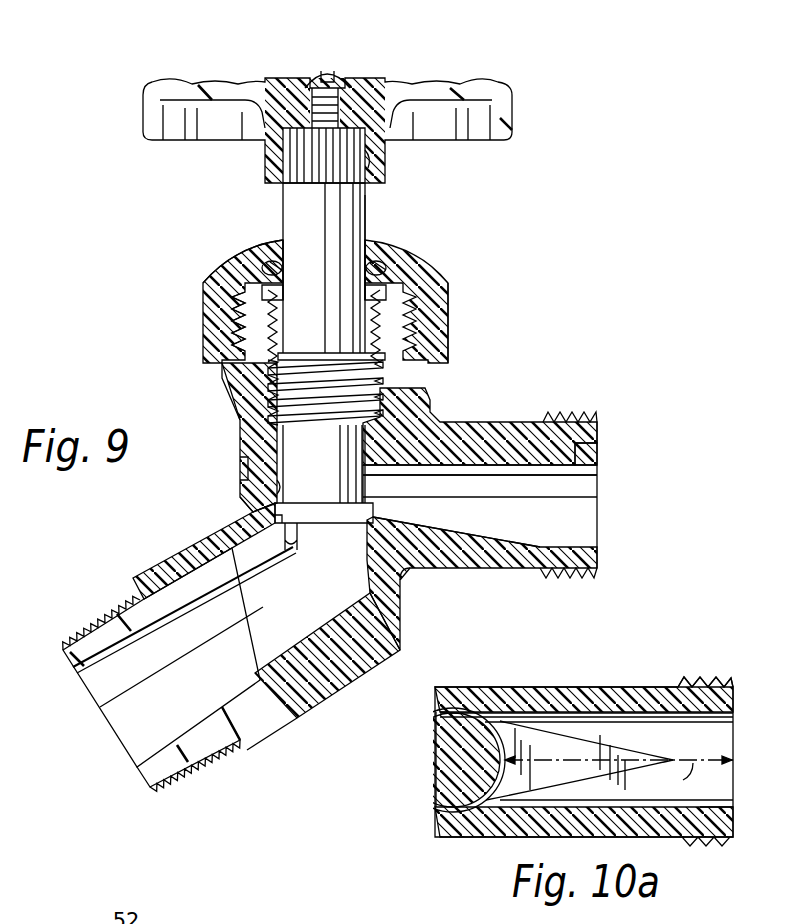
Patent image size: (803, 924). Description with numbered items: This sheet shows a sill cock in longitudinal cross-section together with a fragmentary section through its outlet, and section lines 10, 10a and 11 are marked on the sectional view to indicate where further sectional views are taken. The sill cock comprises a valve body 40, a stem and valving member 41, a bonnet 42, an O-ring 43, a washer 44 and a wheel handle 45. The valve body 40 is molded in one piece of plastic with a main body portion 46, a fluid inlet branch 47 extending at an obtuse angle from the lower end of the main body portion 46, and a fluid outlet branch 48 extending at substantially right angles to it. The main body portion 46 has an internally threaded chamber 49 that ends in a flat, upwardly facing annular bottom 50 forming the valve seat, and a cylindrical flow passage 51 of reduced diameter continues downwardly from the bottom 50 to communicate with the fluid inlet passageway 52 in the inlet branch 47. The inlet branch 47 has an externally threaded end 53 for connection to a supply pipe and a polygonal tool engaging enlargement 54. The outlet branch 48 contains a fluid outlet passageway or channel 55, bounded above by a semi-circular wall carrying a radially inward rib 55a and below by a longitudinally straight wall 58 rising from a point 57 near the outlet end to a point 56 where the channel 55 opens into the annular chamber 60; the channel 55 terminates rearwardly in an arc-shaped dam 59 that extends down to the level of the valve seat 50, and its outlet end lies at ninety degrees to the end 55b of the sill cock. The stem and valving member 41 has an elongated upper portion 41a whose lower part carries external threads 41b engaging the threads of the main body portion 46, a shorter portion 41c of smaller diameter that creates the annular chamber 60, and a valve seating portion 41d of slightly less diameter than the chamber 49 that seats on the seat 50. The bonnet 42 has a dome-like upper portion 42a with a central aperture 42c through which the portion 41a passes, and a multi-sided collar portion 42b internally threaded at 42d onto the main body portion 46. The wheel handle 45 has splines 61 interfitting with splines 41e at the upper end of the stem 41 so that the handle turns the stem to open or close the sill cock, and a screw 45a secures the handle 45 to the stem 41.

In FIG. 9, the valve body 40 is at (240, 469).
In FIG. 9, the stem and valving member 41 is at (372, 222).
In FIG. 9, the elongated upper portion 41a is at (375, 198).
In FIG. 9, the external threads 41b is at (423, 372).
In FIG. 9, the shorter portion 41c is at (290, 455).
In FIG. 9, the valve seating portion 41d is at (183, 562).
In FIG. 10A, the valve seating portion 41d is at (437, 732).
In FIG. 9, the splines 41e is at (300, 150).
In FIG. 9, the bonnet 42 is at (265, 262).
In FIG. 9, the dome-like portion 42a is at (212, 285).
In FIG. 9, the multi-sided collar portion 42b is at (450, 320).
In FIG. 9, the central aperture 42c is at (290, 235).
In FIG. 9, the internal threads 42d is at (232, 308).
In FIG. 9, the O-ring 43 is at (388, 266).
In FIG. 9, the washer 44 is at (406, 290).
In FIG. 9, the wheel handle 45 is at (490, 82).
In FIG. 9, the screw 45a is at (340, 80).
In FIG. 9, the main body portion 46 is at (233, 423).
In FIG. 9, the fluid inlet branch 47 is at (318, 672).
In FIG. 9, the fluid outlet branch 48 is at (432, 578).
In FIG. 10A, the fluid outlet branch 48 is at (633, 686).
In FIG. 9, the stem and valving member receiving chamber 49 is at (285, 501).
In FIG. 9, the annular bottom 50 is at (283, 516).
In FIG. 10A, the annular bottom 50 is at (455, 707).
In FIG. 9, the cylindrical flow passage 51 is at (293, 560).
In FIG. 9, the fluid inlet passageway 52 is at (250, 649).
In FIG. 9, the externally-threaded end 53 is at (212, 770).
In FIG. 9, the polygonal tool engaging enlargement 54 is at (286, 728).
In FIG. 9, the fluid outlet passageway 55 is at (586, 465).
In FIG. 10A, the fluid outlet passageway 55 is at (710, 807).
In FIG. 9, the rib 55a is at (540, 468).
In FIG. 9, the end of the sill cock 55b is at (598, 421).
In FIG. 10A, the end of the sill cock 55b is at (733, 693).
In FIG. 9, the point 56 is at (403, 582).
In FIG. 9, the point 57 is at (597, 497).
In FIG. 10A, the point 57 is at (677, 760).
In FIG. 9, the wall 58 is at (490, 541).
In FIG. 10A, the wall 58 is at (550, 747).
In FIG. 9, the dam 59 is at (300, 535).
In FIG. 10A, the dam 59 is at (437, 780).
In FIG. 9, the annular chamber 60 is at (283, 471).
In FIG. 9, the splines 61 is at (382, 170).
In FIG. 9, the section line 10- 10 is at (355, 600).
In FIG. 9, the section line 10a- 10a is at (328, 460).
In FIG. 9, the section line 11- 11 is at (460, 383).